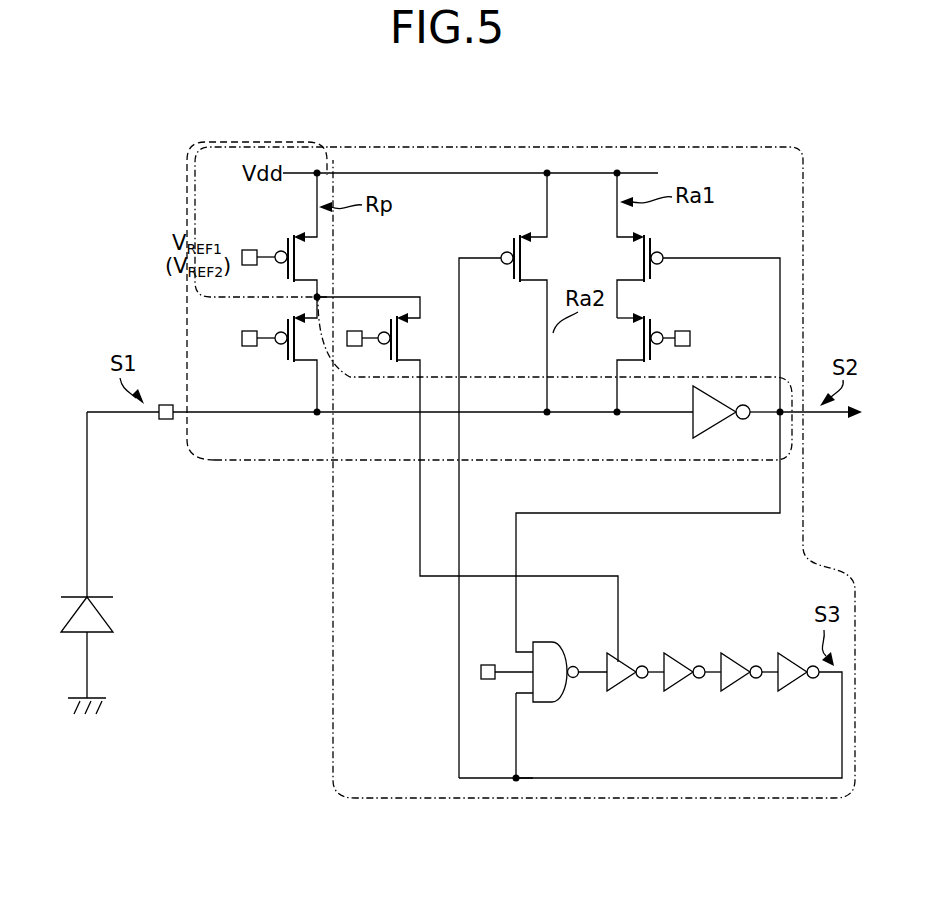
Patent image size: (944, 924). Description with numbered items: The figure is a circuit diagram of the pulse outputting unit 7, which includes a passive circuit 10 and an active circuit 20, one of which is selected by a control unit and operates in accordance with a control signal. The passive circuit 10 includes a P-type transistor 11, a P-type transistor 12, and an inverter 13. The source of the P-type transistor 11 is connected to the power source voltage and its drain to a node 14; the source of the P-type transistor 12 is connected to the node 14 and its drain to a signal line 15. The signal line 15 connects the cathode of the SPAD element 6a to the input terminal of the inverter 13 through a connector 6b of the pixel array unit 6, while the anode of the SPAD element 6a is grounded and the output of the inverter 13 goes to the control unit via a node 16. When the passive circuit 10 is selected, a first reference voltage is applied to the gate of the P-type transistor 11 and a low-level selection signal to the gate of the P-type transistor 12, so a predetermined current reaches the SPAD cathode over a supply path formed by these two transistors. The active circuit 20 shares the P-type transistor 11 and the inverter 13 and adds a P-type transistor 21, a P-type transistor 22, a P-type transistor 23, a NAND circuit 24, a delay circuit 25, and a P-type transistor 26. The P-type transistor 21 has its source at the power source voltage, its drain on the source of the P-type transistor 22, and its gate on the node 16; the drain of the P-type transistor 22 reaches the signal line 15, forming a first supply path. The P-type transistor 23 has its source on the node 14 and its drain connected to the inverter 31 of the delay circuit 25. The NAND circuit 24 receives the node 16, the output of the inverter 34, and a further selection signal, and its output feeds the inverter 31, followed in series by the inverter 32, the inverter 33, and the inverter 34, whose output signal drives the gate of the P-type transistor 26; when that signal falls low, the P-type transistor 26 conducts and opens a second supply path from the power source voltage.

The pixel array unit 6 is at (105, 523).
The SPAD element 6a is at (108, 621).
The connector 6b is at (167, 421).
The pulse outputting unit 7 is at (146, 157).
The passive circuit 10 is at (284, 142).
The P-type transistor 11 is at (286, 240).
The P-type transistor 12 is at (289, 361).
The inverter 13 is at (694, 425).
The node 14 is at (314, 297).
The signal line 15 is at (383, 415).
The node 16 is at (779, 418).
The active circuit 20 is at (456, 147).
The P-type transistor 21 is at (653, 240).
The P-type transistor 22 is at (653, 320).
The P-type transistor 23 is at (394, 317).
The NAND circuit 24 is at (548, 704).
The delay circuit 25 is at (650, 674).
The P-type transistor 26 is at (513, 243).
The inverter 31 is at (614, 694).
The inverter 32 is at (675, 694).
The inverter 33 is at (733, 694).
The inverter 34 is at (791, 694).